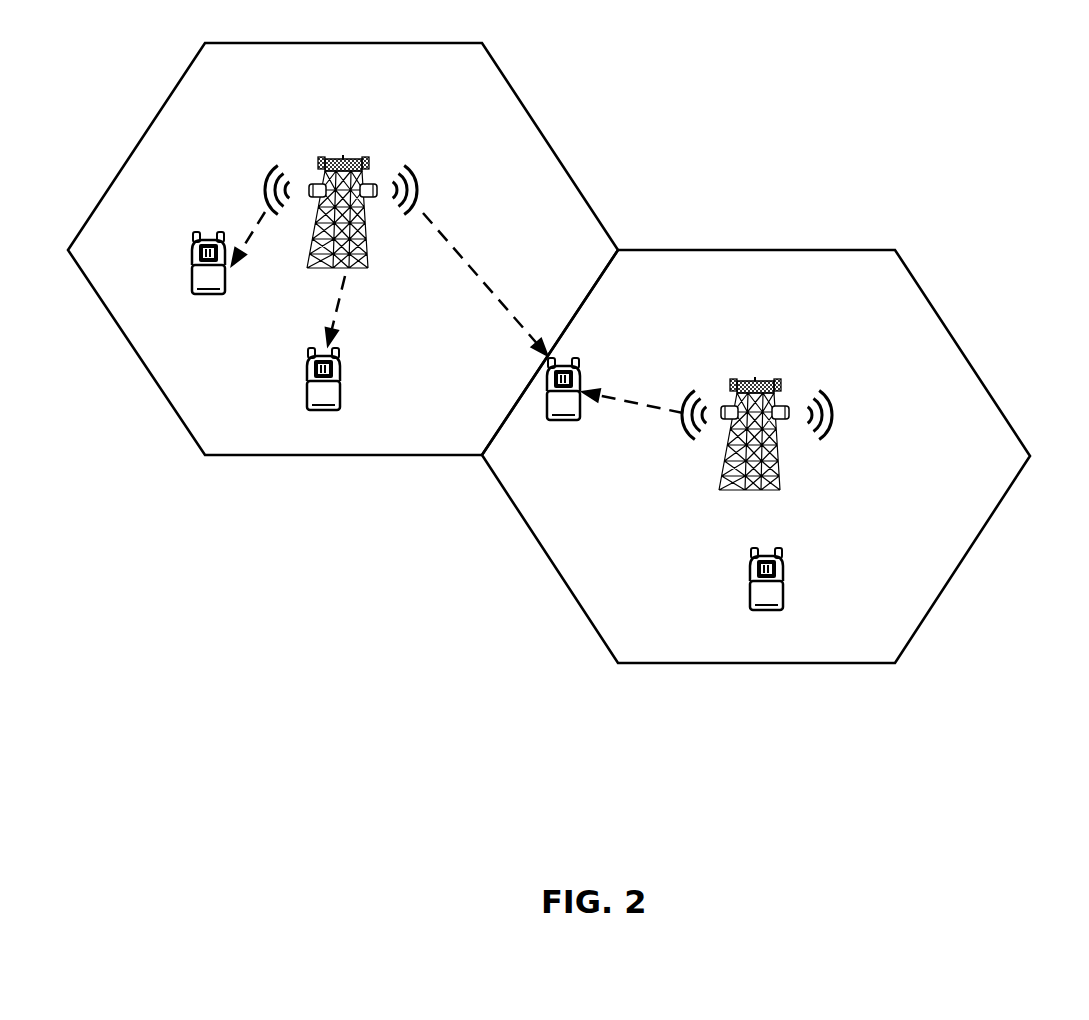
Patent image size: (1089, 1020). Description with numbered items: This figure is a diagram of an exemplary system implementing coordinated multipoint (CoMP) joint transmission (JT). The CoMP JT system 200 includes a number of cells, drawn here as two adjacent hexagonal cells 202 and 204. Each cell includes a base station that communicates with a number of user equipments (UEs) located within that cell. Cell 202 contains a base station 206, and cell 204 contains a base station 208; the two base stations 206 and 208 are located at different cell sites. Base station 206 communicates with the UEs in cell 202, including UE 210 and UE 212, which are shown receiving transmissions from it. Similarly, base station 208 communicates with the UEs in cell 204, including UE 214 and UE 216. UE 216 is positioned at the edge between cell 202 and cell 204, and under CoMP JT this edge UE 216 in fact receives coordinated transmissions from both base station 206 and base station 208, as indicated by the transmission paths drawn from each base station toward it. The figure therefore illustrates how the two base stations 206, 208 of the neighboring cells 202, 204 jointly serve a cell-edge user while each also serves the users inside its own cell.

The CoMP JT system 200 is at (545, 808).
The cell 202 is at (530, 118).
The cell 204 is at (957, 343).
The base station 206 is at (358, 266).
The base station 208 is at (770, 497).
The UE 210 is at (305, 385).
The UE 212 is at (190, 265).
The UE 214 is at (750, 607).
The UE 216 is at (589, 403).